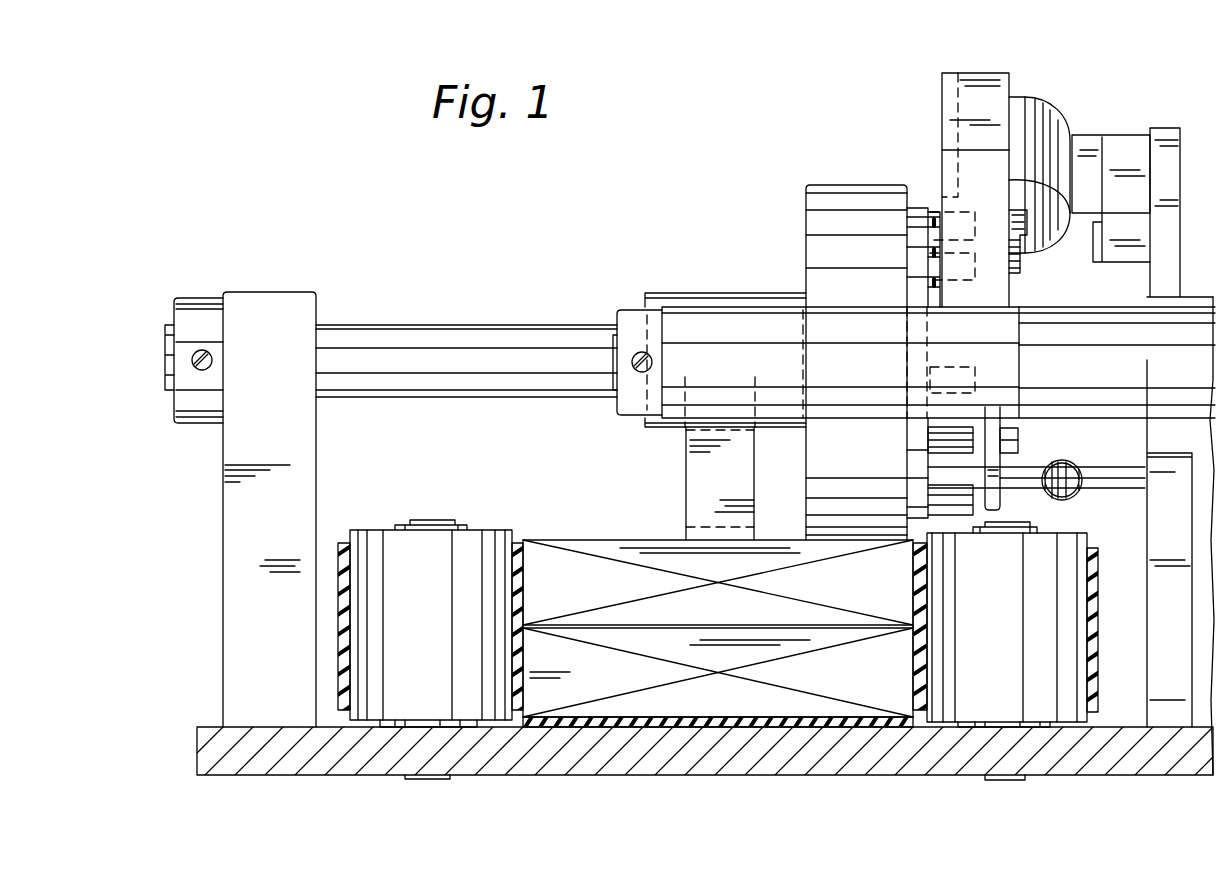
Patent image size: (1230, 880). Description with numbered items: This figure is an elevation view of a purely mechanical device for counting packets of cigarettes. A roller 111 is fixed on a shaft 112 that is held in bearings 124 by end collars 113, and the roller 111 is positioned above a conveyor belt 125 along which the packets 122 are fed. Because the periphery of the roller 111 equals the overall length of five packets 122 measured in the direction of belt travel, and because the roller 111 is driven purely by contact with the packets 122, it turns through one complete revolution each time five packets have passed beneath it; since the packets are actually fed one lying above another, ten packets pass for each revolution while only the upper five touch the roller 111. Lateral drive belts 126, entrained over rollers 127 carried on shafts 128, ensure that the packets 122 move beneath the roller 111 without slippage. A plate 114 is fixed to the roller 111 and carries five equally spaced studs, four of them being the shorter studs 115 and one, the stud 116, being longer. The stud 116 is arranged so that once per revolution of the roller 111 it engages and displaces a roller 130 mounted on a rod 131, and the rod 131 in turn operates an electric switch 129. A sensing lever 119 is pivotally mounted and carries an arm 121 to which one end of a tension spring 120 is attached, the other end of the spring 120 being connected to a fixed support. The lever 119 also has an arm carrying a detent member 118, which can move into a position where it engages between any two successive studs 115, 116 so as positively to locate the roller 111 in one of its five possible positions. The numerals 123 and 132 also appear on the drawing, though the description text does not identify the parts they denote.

The roller 111 is at (820, 225).
The shaft 112 is at (480, 358).
The end collars 113 is at (199, 388).
The plate 114 is at (922, 215).
The studs 115 is at (965, 382).
The stud 116 is at (1013, 440).
The detent member 118 is at (975, 92).
The sensing lever 119 is at (700, 503).
The tension spring 120 is at (1078, 497).
The arm 121 is at (993, 478).
The packets 122 is at (825, 680).
The base plate 123 is at (845, 743).
The bearings 124 is at (253, 540).
The conveyor belt 125 is at (657, 733).
The lateral drive belts 126 is at (518, 710).
The rollers 127 is at (398, 555).
The shafts 128 is at (447, 523).
The electric switch 129 is at (1040, 127).
The roller 130 is at (1022, 268).
The rod 131 is at (1137, 140).
The disc 132 is at (1166, 160).